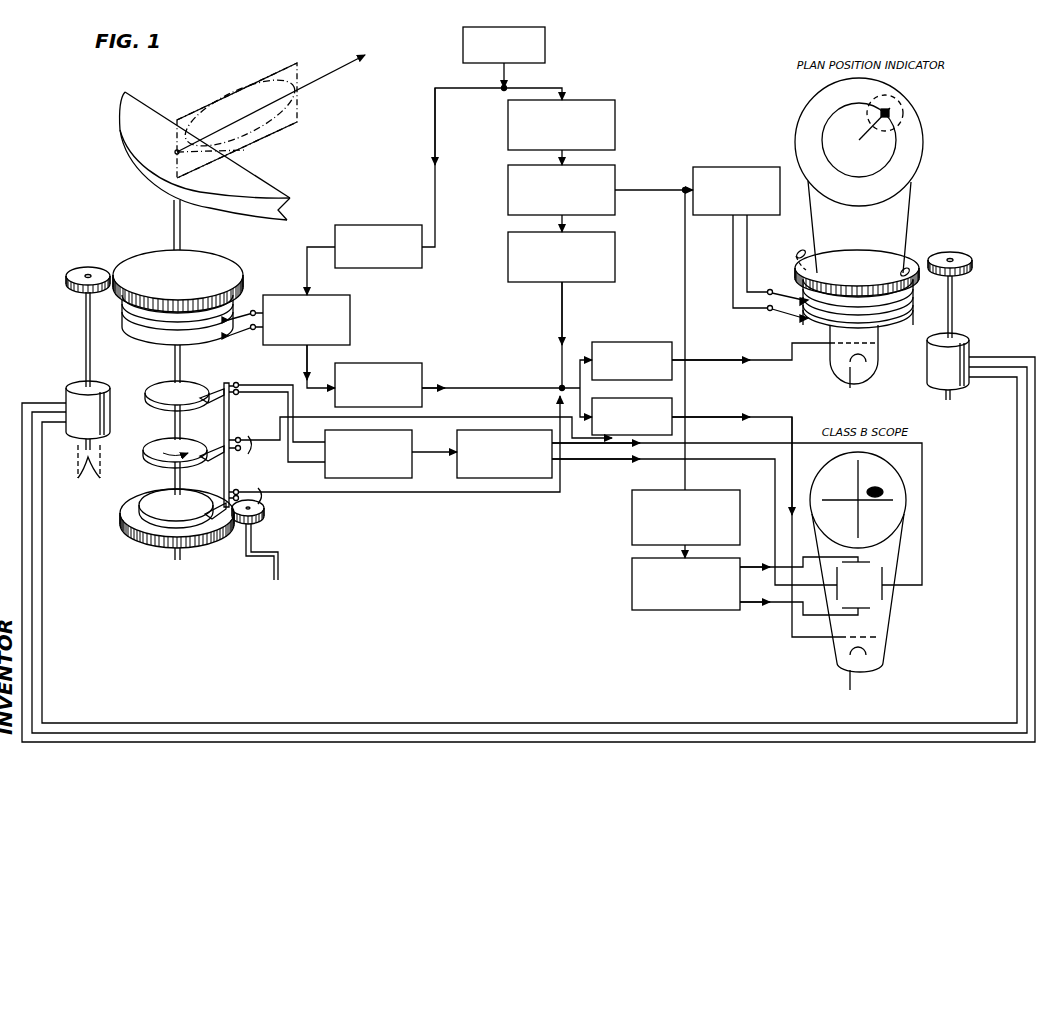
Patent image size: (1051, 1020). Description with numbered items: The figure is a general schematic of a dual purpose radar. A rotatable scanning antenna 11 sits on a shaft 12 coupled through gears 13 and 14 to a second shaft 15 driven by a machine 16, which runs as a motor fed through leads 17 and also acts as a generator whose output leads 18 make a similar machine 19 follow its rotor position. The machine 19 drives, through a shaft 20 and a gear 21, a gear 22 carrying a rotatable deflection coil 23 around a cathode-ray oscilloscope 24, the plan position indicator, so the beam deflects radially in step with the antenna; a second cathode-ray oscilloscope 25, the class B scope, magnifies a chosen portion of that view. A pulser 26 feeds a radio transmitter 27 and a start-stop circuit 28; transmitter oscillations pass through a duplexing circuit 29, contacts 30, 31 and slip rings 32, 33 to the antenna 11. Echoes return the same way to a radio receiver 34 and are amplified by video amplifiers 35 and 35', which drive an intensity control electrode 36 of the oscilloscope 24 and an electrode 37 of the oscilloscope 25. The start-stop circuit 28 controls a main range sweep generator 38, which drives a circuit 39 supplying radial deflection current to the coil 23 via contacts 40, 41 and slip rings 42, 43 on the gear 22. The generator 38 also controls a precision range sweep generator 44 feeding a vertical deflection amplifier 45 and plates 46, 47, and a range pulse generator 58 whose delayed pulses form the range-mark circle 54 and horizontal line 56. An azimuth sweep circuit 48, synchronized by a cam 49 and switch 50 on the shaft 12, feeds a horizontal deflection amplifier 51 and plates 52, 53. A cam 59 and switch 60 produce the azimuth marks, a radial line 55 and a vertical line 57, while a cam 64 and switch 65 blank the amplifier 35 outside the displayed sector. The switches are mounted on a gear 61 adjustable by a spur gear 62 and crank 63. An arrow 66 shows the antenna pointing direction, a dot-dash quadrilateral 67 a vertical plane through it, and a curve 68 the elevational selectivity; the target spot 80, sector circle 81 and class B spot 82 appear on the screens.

The scanning antenna 11 is at (128, 108).
The shaft 12 is at (172, 212).
The gear 13 is at (141, 258).
The gear 14 is at (78, 266).
The second shaft 15 is at (85, 341).
The machine 16 is at (72, 426).
The leads 17 is at (89, 472).
The output leads 18 is at (222, 746).
The machine 19 is at (964, 340).
The shaft 20 is at (953, 298).
The gear 21 is at (972, 260).
The gear 22 is at (912, 242).
The deflection coil 23 is at (800, 250).
The cathode-ray oscilloscope 24 is at (903, 195).
The second cathode-ray oscilloscope 25 is at (880, 623).
The pulser 26 is at (545, 45).
The radio transmitter 27 is at (383, 228).
The start-stop circuit 28 is at (508, 128).
The duplexing circuit 29 is at (350, 318).
The contact 30 is at (254, 310).
The contact 31 is at (253, 330).
The slip ring 32 is at (135, 314).
The slip ring 33 is at (135, 330).
The radio receiver 34 is at (422, 372).
The video amplifier 35 is at (716, 517).
The video amplifier 35' is at (711, 361).
The intensity control electrode 36 is at (880, 368).
The electrode 37 is at (880, 637).
The main range sweep generator 38 is at (508, 192).
The circuit 39 is at (743, 167).
The contact 40 is at (763, 290).
The contact 41 is at (757, 313).
The slip ring 42 is at (908, 318).
The slip ring 43 is at (893, 330).
The precision range sweep generator 44 is at (672, 488).
The vertical deflection amplifier 45 is at (718, 611).
The plate 46 is at (870, 563).
The plate 47 is at (870, 609).
The azimuth sweep generator circuit 48 is at (325, 476).
The cam 49 is at (166, 380).
The switch 50 is at (214, 395).
The horizontal deflection amplifier 51 is at (457, 468).
The plate 52 is at (836, 570).
The plate 53 is at (883, 575).
The circle 54 is at (895, 158).
The radial line 55 is at (866, 138).
The horizontal line 56 is at (893, 500).
The vertical line 57 is at (855, 468).
The range pulse generator 58 is at (508, 258).
The cam 59 is at (165, 495).
The switch 60 is at (222, 500).
The gear 61 is at (205, 543).
The spur gear 62 is at (258, 522).
The crank 63 is at (262, 566).
The cam 64 is at (167, 440).
The switch 65 is at (218, 448).
The arrow 66 is at (345, 66).
The dot-dash line 67 is at (283, 70).
The curve 68 is at (237, 90).
The target indication 80 is at (889, 112).
The selected sector circle 81 is at (900, 88).
The target indication on class B scope 82 is at (880, 488).